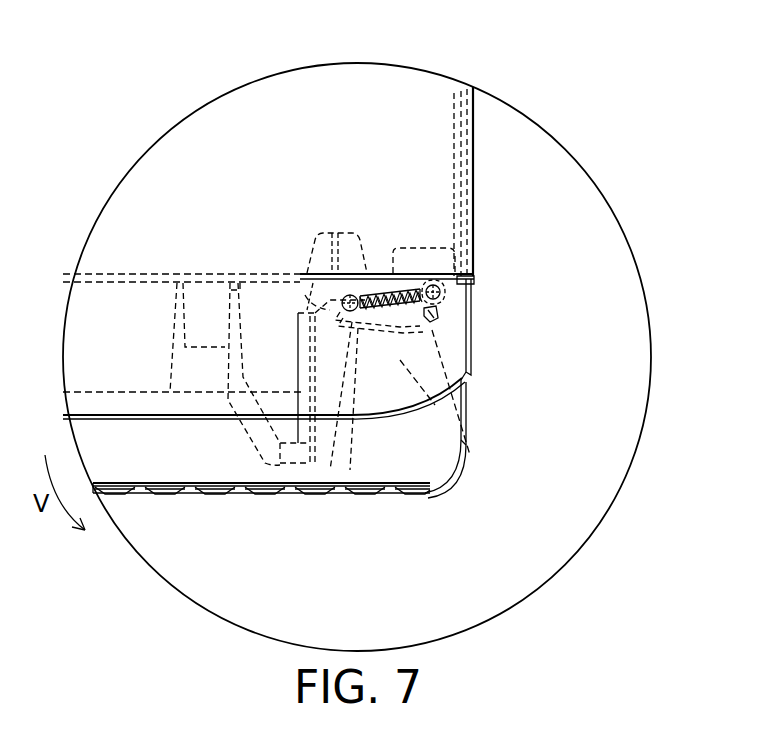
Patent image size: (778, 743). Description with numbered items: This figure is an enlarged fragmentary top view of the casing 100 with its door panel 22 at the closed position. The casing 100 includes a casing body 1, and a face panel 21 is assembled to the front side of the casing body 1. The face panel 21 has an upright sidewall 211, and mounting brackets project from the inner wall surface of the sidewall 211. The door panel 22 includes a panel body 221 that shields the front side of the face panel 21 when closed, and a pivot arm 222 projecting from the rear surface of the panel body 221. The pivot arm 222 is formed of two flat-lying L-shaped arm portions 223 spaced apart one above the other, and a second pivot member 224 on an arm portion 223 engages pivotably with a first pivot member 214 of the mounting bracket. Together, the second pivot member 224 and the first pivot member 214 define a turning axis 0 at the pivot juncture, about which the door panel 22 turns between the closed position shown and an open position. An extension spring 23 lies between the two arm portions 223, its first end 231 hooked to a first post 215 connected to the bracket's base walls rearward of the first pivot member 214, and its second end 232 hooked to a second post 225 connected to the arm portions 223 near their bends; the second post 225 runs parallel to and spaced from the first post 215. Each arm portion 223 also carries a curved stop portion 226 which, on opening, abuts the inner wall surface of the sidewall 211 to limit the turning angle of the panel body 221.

The casing body 1 is at (419, 130).
The casing 100 is at (505, 151).
The face panel 21 is at (125, 400).
The sidewall 211 is at (466, 321).
The first pivot member 214 is at (466, 402).
The first post 215 is at (446, 292).
The turning axis 0 is at (468, 374).
The door panel 22 is at (198, 512).
The panel body 221 is at (253, 492).
The pivot arm 222 is at (357, 403).
The arm portion 223 is at (325, 405).
The second pivot member 224 is at (440, 320).
The second post 225 is at (317, 236).
The stop portion 226 is at (445, 410).
The extension spring 23 is at (396, 270).
The first end 231 is at (458, 273).
The second end 232 is at (300, 300).